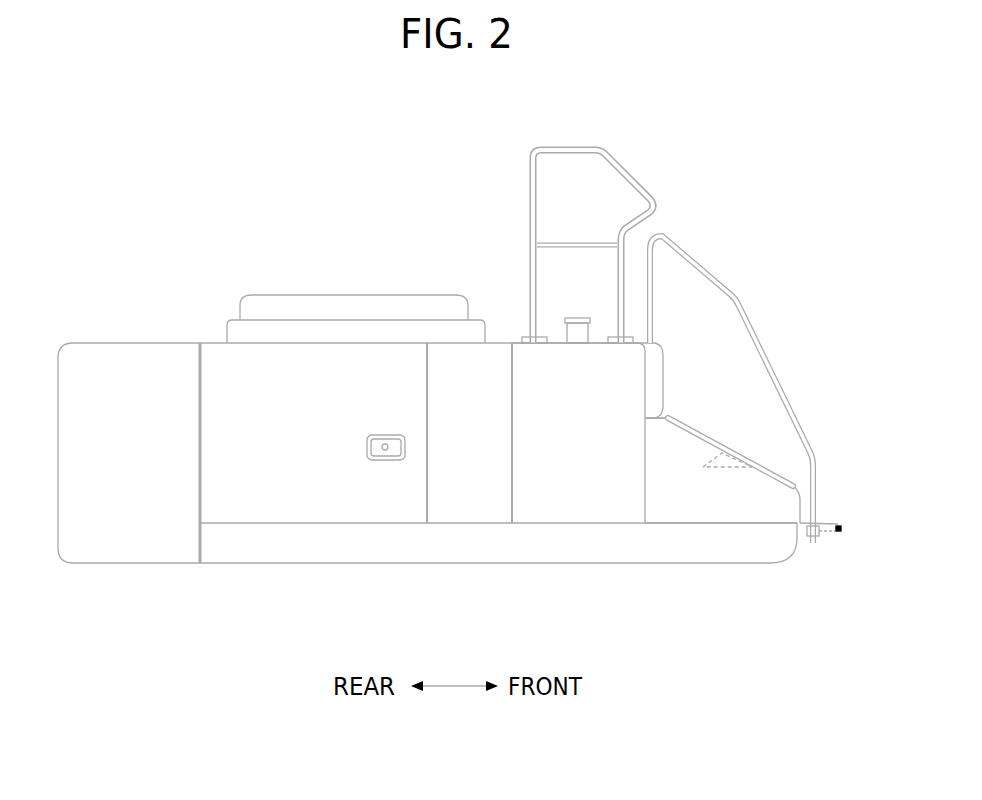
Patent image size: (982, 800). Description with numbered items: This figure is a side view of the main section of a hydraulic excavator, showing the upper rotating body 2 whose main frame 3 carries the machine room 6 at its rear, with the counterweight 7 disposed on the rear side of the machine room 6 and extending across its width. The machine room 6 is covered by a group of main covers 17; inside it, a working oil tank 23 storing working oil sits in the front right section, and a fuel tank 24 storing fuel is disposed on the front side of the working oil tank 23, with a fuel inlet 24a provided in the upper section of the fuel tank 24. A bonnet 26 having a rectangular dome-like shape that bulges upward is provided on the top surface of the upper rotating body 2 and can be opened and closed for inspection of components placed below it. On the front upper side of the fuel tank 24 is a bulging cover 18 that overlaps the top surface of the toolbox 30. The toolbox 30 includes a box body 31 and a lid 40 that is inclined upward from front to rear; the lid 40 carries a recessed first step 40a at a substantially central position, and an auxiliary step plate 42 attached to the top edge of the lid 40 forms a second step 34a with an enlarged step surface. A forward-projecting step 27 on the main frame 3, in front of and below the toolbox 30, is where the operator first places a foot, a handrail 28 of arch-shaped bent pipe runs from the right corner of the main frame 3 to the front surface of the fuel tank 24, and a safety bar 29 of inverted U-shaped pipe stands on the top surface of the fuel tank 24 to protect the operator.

The upper rotating body 2 is at (238, 190).
The main frame 3 is at (637, 545).
The machine room 6 is at (307, 542).
The counterweight 7 is at (107, 355).
The main covers 17 is at (371, 503).
The bulging cover 18 is at (677, 353).
The working oil tank 23 is at (480, 503).
The fuel tank 24 is at (588, 503).
The fuel inlet 24a is at (575, 330).
The bonnet 26 is at (351, 297).
The step 27 is at (841, 529).
The handrail 28 is at (735, 296).
The safety bar 29 is at (622, 172).
The toolbox 30 is at (748, 436).
The box body 31 is at (752, 540).
The second step 34a is at (668, 418).
The lid 40 is at (765, 468).
The first step 40a is at (707, 467).
The auxiliary step plate 42 is at (710, 424).